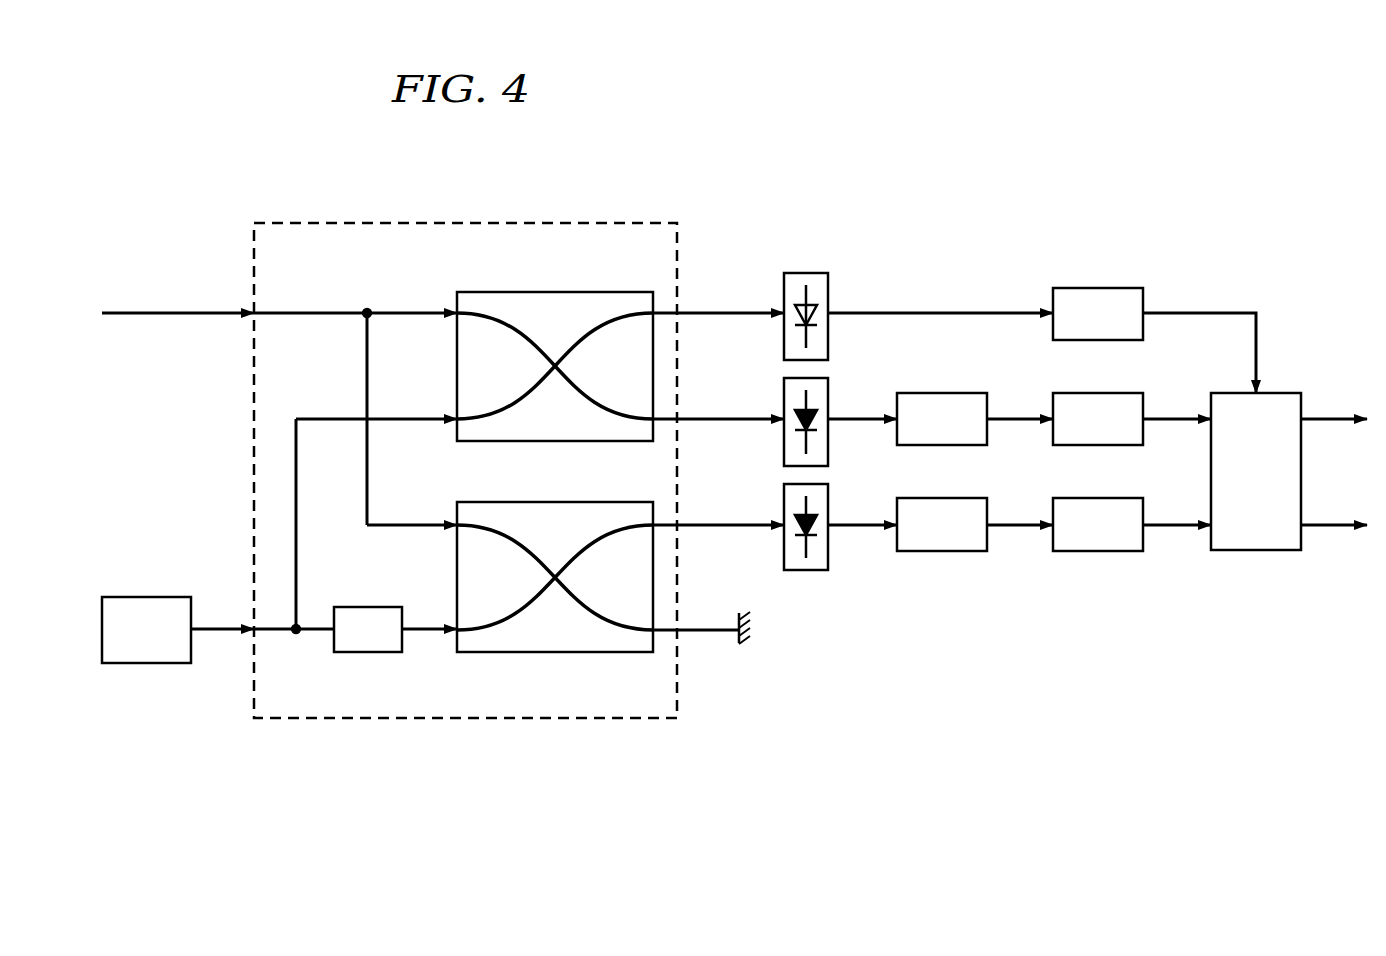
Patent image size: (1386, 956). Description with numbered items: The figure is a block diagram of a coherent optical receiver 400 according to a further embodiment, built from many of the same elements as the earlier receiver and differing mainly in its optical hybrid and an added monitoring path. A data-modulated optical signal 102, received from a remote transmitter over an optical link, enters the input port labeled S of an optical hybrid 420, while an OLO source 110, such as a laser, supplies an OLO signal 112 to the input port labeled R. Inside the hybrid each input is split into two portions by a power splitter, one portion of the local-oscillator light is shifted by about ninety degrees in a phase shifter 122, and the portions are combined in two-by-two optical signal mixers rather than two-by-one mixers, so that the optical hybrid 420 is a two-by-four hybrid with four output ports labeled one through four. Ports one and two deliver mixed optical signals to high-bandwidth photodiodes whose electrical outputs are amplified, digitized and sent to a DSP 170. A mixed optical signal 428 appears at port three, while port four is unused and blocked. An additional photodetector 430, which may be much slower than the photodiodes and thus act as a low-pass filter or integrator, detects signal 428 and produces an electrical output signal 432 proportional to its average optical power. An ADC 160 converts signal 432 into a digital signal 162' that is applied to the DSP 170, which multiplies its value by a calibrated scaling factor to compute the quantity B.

The coherent optical receiver 400 is at (478, 146).
The data-modulated optical signal 102 is at (172, 308).
The OLO source 110 is at (148, 597).
The OLO signal 112 is at (216, 636).
The phase shifter 122 is at (380, 607).
The optical hybrid 420 is at (605, 223).
The mixed optical signal 428 is at (731, 306).
The photodetector 430 is at (805, 270).
The electrical output signal 432 is at (942, 306).
The ADC 160 is at (1098, 286).
The digital signal 162' is at (1199, 324).
The DSP 170 is at (1275, 393).